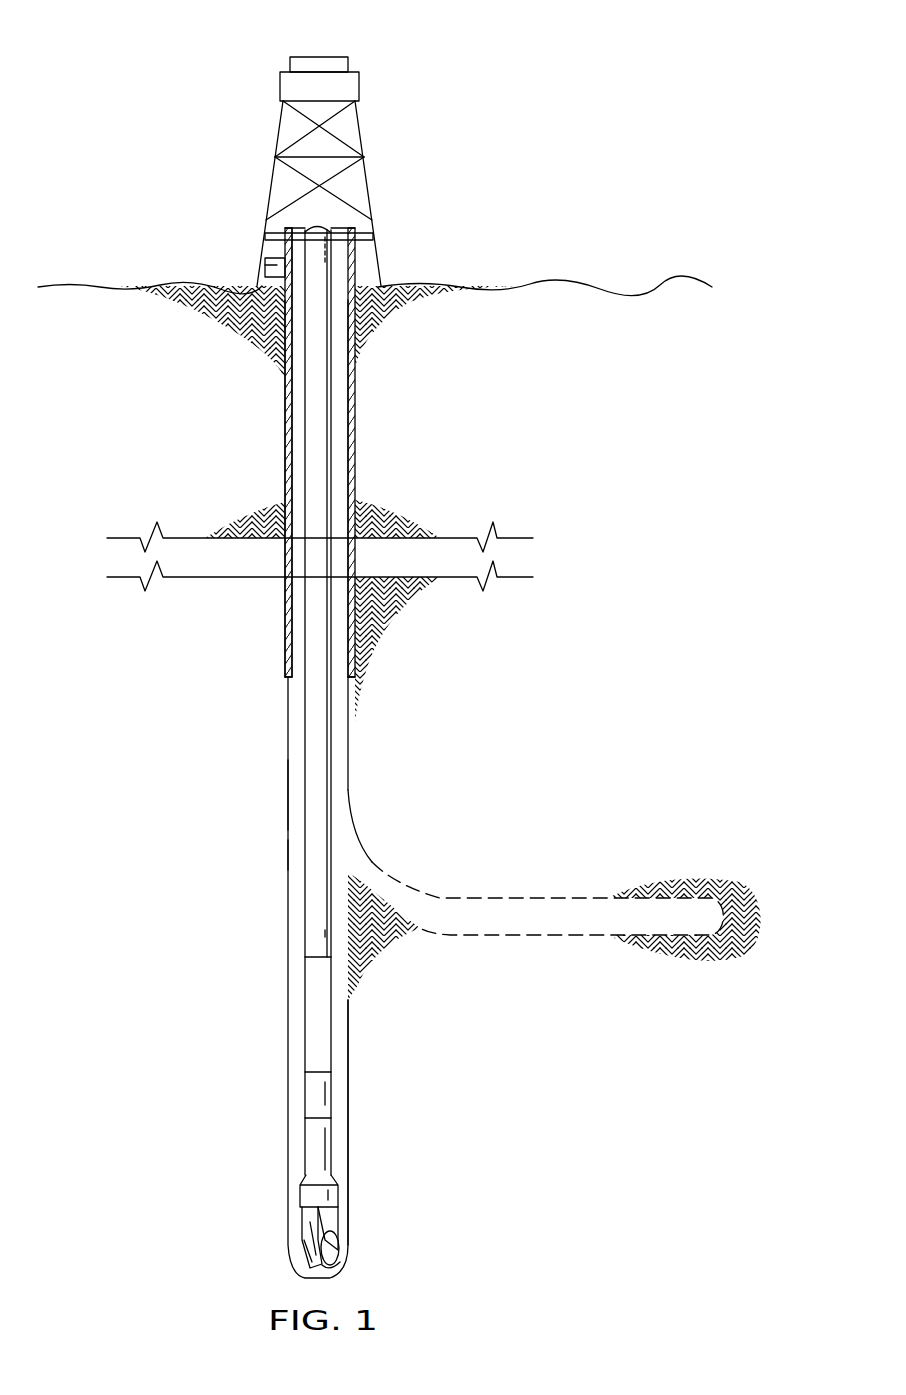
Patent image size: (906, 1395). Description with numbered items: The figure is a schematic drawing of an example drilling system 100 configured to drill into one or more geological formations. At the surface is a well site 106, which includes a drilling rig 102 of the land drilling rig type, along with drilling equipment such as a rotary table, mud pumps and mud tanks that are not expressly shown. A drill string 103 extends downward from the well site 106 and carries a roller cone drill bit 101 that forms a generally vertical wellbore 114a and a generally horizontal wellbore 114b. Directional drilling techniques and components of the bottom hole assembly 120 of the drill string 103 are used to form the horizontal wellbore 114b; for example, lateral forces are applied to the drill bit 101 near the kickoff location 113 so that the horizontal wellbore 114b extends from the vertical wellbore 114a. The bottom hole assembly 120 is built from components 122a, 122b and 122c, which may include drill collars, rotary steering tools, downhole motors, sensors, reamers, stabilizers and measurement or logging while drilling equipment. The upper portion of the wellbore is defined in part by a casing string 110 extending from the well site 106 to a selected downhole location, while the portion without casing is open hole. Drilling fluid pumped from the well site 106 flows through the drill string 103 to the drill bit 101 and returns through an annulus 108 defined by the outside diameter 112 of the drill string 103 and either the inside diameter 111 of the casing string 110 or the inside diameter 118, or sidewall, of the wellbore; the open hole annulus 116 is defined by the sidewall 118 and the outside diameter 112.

The drilling system 100 is at (399, 640).
The roller cone drill bit 101 is at (286, 1234).
The drilling rig 102 is at (210, 102).
The drill string 103 is at (338, 396).
The well site 106 is at (365, 260).
The annulus 108 is at (296, 403).
The casing string 110 is at (285, 455).
The inside diameter of casing string 111 is at (345, 462).
The outside diameter of drill string 112 is at (305, 617).
The kickoff location 113 is at (350, 768).
The generally vertical wellbore 114a is at (283, 718).
The generally horizontal wellbore 114b is at (508, 885).
The open hole annulus 116 is at (297, 790).
The inside diameter of wellbore 118 is at (288, 858).
The bottom hole assembly 120 is at (352, 1097).
The component of bottom hole assembly 122a is at (313, 1008).
The component of bottom hole assembly 122b is at (313, 1093).
The component of bottom hole assembly 122c is at (313, 1152).